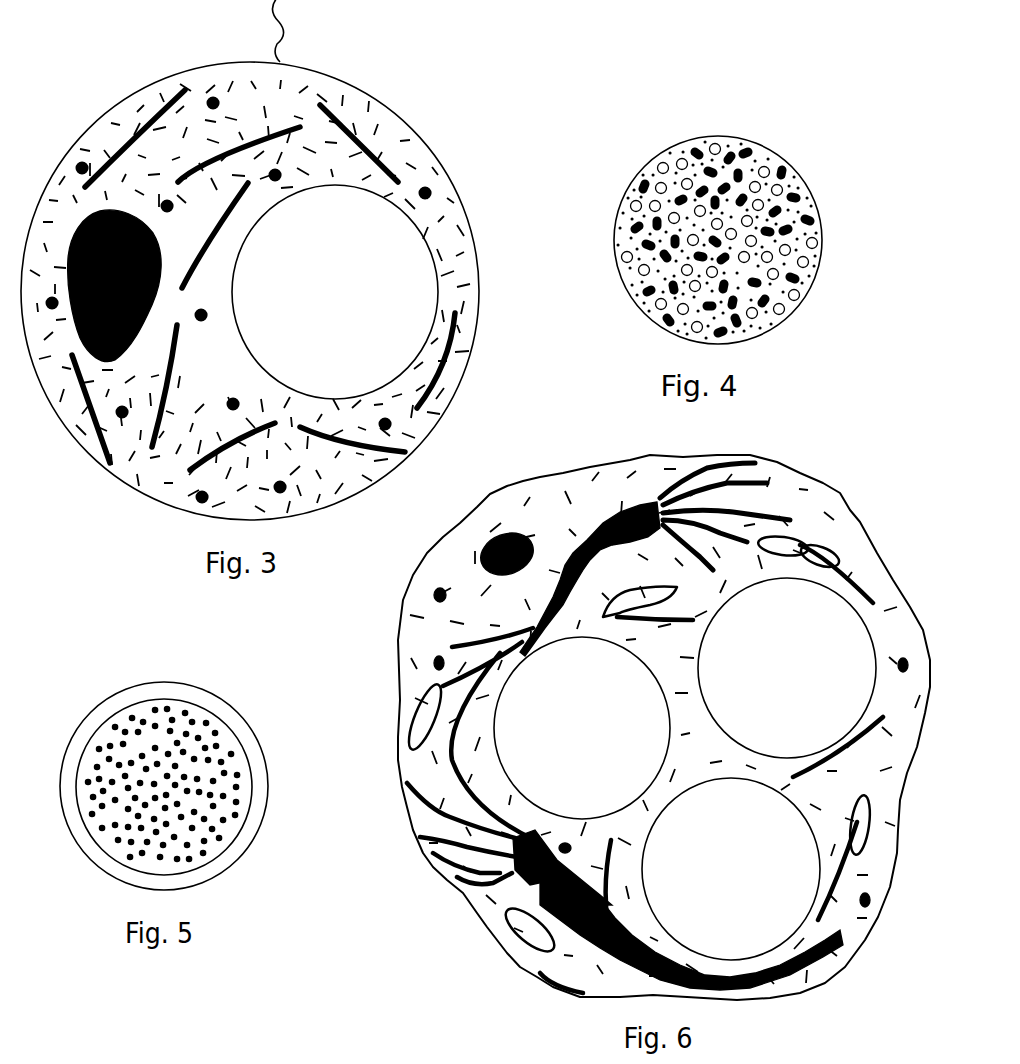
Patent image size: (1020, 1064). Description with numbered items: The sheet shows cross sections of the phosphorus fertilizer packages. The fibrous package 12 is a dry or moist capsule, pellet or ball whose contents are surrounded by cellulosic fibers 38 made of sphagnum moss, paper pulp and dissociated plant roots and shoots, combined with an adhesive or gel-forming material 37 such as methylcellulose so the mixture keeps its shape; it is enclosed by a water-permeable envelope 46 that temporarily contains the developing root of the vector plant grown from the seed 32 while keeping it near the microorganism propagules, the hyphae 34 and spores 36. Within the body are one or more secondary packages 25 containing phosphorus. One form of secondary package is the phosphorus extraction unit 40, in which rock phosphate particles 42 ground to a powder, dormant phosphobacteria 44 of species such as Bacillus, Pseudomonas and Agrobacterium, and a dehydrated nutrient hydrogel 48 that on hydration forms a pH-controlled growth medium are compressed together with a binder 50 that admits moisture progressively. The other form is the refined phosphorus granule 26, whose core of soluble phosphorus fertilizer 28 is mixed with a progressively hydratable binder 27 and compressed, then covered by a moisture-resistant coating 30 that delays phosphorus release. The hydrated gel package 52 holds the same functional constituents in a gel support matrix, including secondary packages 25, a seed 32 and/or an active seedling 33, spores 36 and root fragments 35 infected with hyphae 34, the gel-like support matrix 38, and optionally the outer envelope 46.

In FIG. 3, the fibrous package 12 is at (310, 52).
In FIG. 3, the secondary package 25 is at (433, 219).
In FIG. 6, the secondary package 25 is at (496, 729).
In FIG. 5, the refined phosphorus granule 26 is at (178, 674).
In FIG. 5, the binder 27 is at (232, 769).
In FIG. 3, the soluble phosphorus fertilizer 28 is at (446, 362).
In FIG. 5, the soluble phosphorus fertilizer 28 is at (210, 848).
In FIG. 5, the coating 30 is at (250, 835).
In FIG. 3, the seed 32 is at (80, 229).
In FIG. 6, the seed 32 is at (495, 537).
In FIG. 6, the seedling 33 is at (663, 496).
In FIG. 3, the hyphae 34 is at (106, 450).
In FIG. 6, the hyphae 34 is at (459, 640).
In FIG. 6, the root fragments 35 is at (872, 848).
In FIG. 3, the spores 36 is at (210, 100).
In FIG. 6, the spores 36 is at (866, 907).
In FIG. 6, the adhesive or gel-forming material 37 is at (401, 756).
In FIG. 3, the cellulosic fibers 38 is at (396, 152).
In FIG. 6, the cellulosic fibers 38 is at (576, 493).
In FIG. 4, the phosphorus extraction unit 40 is at (806, 144).
In FIG. 4, the rock phosphate particles 42 is at (800, 177).
In FIG. 4, the phosphobacteria 44 is at (759, 151).
In FIG. 3, the envelope 46 is at (349, 82).
In FIG. 6, the envelope 46 is at (537, 978).
In FIG. 4, the nutrient hydrogel 48 is at (801, 256).
In FIG. 4, the binder 50 is at (768, 314).
In FIG. 6, the hydrated gel package 52 is at (861, 507).